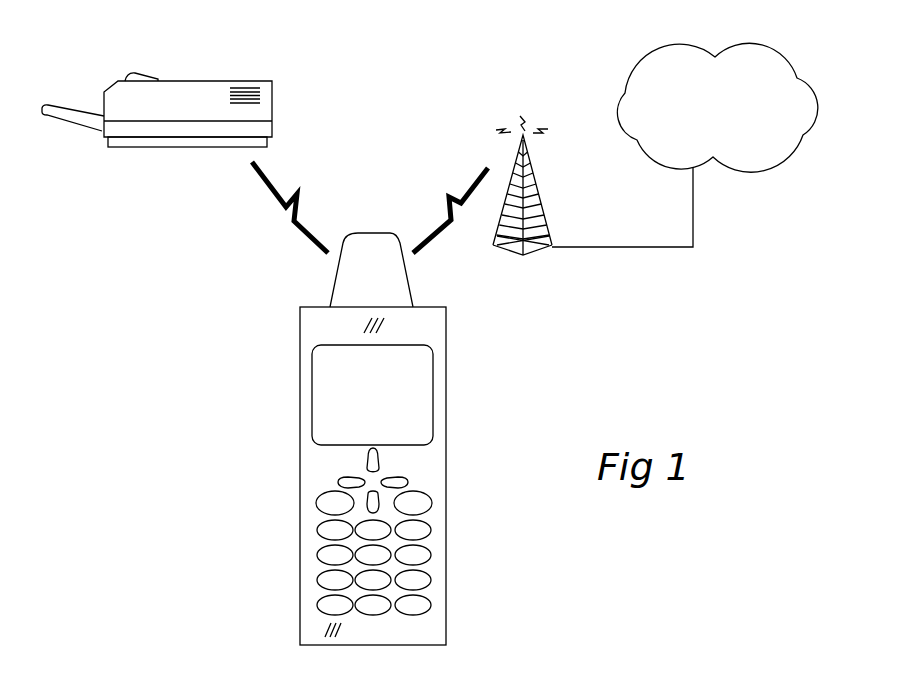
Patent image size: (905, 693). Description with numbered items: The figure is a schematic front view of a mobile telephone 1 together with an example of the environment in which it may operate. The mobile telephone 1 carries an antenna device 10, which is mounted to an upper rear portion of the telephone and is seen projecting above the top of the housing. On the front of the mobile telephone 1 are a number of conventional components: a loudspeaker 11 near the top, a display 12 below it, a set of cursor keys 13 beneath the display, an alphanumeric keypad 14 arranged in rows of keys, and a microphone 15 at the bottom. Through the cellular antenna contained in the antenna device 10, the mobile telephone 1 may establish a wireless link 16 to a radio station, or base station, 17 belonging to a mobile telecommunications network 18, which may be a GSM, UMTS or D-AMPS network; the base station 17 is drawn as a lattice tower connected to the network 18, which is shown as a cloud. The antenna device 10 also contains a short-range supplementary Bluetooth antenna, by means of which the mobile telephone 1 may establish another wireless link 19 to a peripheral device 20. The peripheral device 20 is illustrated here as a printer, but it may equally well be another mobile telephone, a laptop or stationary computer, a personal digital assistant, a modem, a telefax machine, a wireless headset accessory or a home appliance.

The mobile telephone 1 is at (437, 327).
The antenna device 10 is at (398, 288).
The loudspeaker 11 is at (360, 332).
The display 12 is at (322, 400).
The set of cursor keys 13 is at (370, 468).
The alphanumeric keypad 14 is at (320, 533).
The microphone 15 is at (322, 626).
The wireless link 16 is at (441, 213).
The radio station (base station) 17 is at (538, 205).
The mobile telecommunications network 18 is at (628, 90).
The wireless link 19 is at (300, 203).
The peripheral device 20 is at (203, 94).